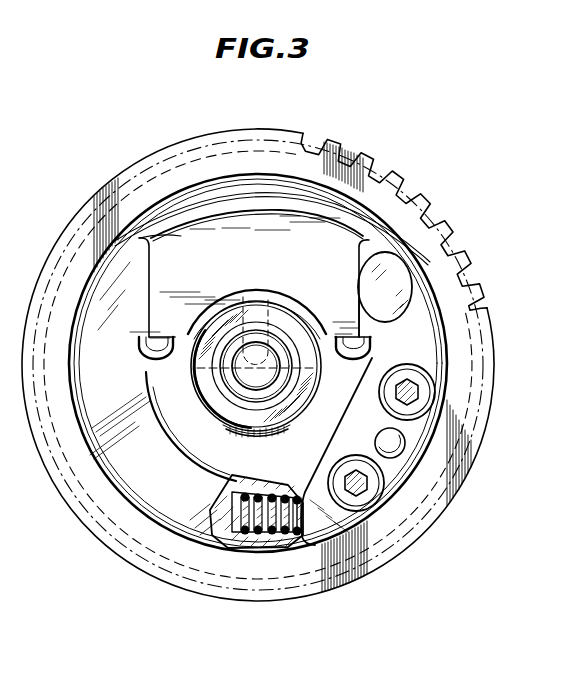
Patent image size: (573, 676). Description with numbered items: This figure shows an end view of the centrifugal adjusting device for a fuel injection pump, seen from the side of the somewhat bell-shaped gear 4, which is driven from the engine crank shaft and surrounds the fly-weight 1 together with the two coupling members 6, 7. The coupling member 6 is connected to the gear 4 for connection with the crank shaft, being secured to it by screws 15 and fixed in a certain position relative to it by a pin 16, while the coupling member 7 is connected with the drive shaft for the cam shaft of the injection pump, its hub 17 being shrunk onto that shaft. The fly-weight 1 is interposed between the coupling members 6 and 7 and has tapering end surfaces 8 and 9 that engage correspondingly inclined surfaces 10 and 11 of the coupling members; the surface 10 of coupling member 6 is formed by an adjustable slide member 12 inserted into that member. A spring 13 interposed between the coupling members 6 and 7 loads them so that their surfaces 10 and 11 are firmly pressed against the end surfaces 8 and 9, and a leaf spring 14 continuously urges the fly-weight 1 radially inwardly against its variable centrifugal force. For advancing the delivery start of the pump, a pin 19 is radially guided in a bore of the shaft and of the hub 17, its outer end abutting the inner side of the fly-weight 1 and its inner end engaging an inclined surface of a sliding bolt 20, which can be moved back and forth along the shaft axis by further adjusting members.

The fly-weight 1 is at (181, 235).
The gear 4 is at (426, 205).
The coupling member 6 is at (420, 322).
The coupling member 7 is at (152, 493).
The tapering end surface 8 is at (359, 268).
The tapering end surface 9 is at (151, 268).
The inclined surface 10 is at (358, 296).
The inclined surface 11 is at (157, 306).
The adjustable slide member 12 is at (400, 275).
The spring 13 is at (300, 553).
The leaf spring 14 is at (320, 215).
The screws 15 is at (412, 398).
The pin 16 is at (400, 452).
The hub 17 is at (221, 402).
The pin 19 is at (256, 297).
The sliding bolt 20 is at (267, 380).